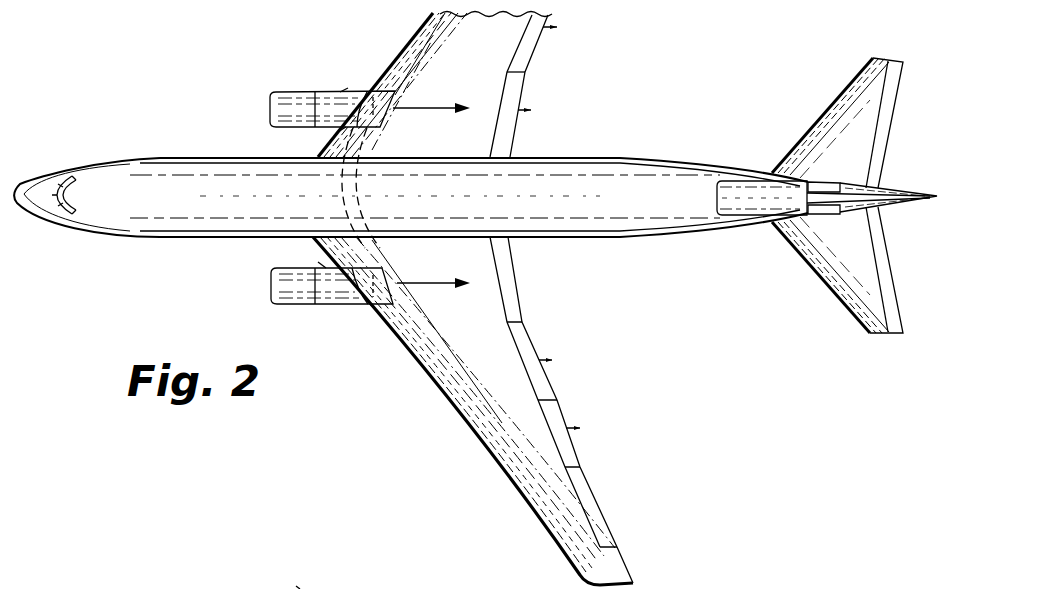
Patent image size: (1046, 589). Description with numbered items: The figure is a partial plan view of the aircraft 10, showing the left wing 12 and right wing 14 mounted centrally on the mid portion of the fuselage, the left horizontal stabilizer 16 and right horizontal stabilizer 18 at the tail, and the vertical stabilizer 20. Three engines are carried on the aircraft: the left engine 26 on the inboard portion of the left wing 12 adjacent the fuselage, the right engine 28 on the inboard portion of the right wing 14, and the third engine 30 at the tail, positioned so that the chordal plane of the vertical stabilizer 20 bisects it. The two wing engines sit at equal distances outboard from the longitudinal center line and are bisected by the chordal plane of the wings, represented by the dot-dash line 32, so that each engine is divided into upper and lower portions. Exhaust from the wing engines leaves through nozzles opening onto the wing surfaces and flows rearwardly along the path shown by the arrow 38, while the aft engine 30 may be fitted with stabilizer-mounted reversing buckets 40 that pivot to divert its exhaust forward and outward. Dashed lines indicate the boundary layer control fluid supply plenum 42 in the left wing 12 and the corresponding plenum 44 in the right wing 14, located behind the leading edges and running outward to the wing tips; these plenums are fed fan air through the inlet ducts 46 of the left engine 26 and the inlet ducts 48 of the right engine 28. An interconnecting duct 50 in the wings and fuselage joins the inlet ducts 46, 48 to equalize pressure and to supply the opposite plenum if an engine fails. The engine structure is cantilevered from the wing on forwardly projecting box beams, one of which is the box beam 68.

The aircraft 10 is at (617, 150).
The left wing 12 is at (518, 383).
The right wing 14 is at (504, 52).
The left horizontal stabilizer 16 is at (853, 267).
The right horizontal stabilizer 18 is at (850, 107).
The vertical stabilizer 20 is at (878, 193).
The left engine 26 is at (290, 306).
The right engine 28 is at (270, 92).
The third engine 30 is at (755, 218).
The chordal plane 32 is at (392, 100).
The exhaust path arrow 38 is at (433, 110).
The reversing buckets 40 is at (818, 184).
The boundary layer control fluid supply plenum 42 is at (373, 152).
The boundary layer control fluid supply plenum 44 is at (430, 27).
The inlet ducts 46 is at (315, 262).
The inlet ducts 48 is at (346, 90).
The interconnecting duct 50 is at (341, 199).
The box beam 68 is at (298, 588).